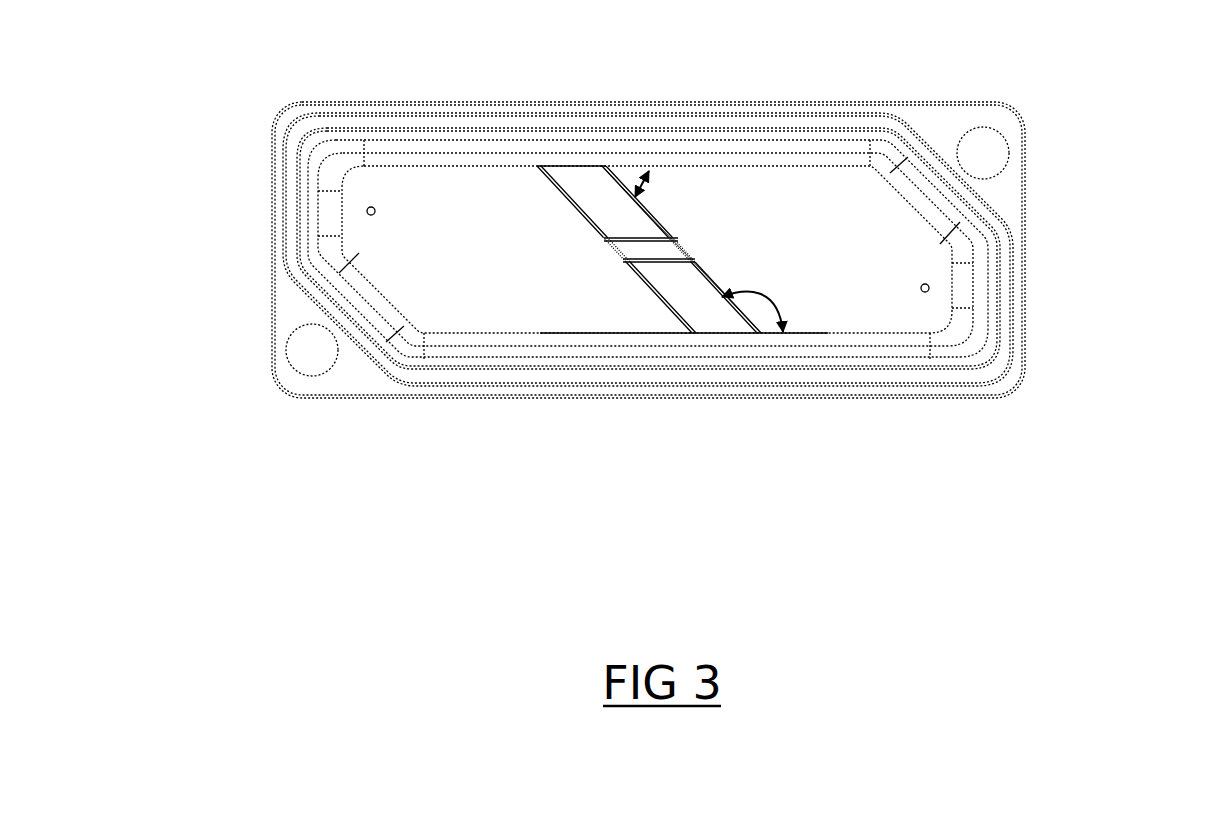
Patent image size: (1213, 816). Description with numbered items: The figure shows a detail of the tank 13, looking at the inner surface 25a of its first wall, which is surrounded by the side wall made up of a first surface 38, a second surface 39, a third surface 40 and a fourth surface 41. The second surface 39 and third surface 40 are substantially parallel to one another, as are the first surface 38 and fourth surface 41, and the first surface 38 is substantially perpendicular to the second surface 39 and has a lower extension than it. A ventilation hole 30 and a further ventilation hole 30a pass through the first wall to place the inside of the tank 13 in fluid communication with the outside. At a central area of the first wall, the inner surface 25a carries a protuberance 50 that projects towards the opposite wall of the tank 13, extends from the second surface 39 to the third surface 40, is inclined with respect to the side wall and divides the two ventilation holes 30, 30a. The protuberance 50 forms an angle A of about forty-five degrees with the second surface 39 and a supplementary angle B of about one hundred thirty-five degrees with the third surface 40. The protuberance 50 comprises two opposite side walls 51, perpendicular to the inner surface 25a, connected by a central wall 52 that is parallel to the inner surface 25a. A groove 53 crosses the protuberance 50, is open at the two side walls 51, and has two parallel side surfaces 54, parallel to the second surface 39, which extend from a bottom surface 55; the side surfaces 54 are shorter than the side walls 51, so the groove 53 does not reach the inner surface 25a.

The tank 13 is at (340, 418).
The inner surface 25a is at (875, 230).
The ventilation hole 30 is at (367, 209).
The further ventilation hole 30a is at (928, 291).
The first surface 38 is at (298, 232).
The second surface 39 is at (527, 125).
The third surface 40 is at (743, 393).
The fourth surface 41 is at (995, 277).
The protuberance 50 is at (681, 267).
The side walls 51 is at (565, 195).
The central wall 52 is at (697, 298).
The groove 53 is at (613, 270).
The side surfaces 54 is at (633, 240).
The bottom surface 55 is at (663, 250).
The angle A is at (634, 196).
The angle B is at (767, 303).